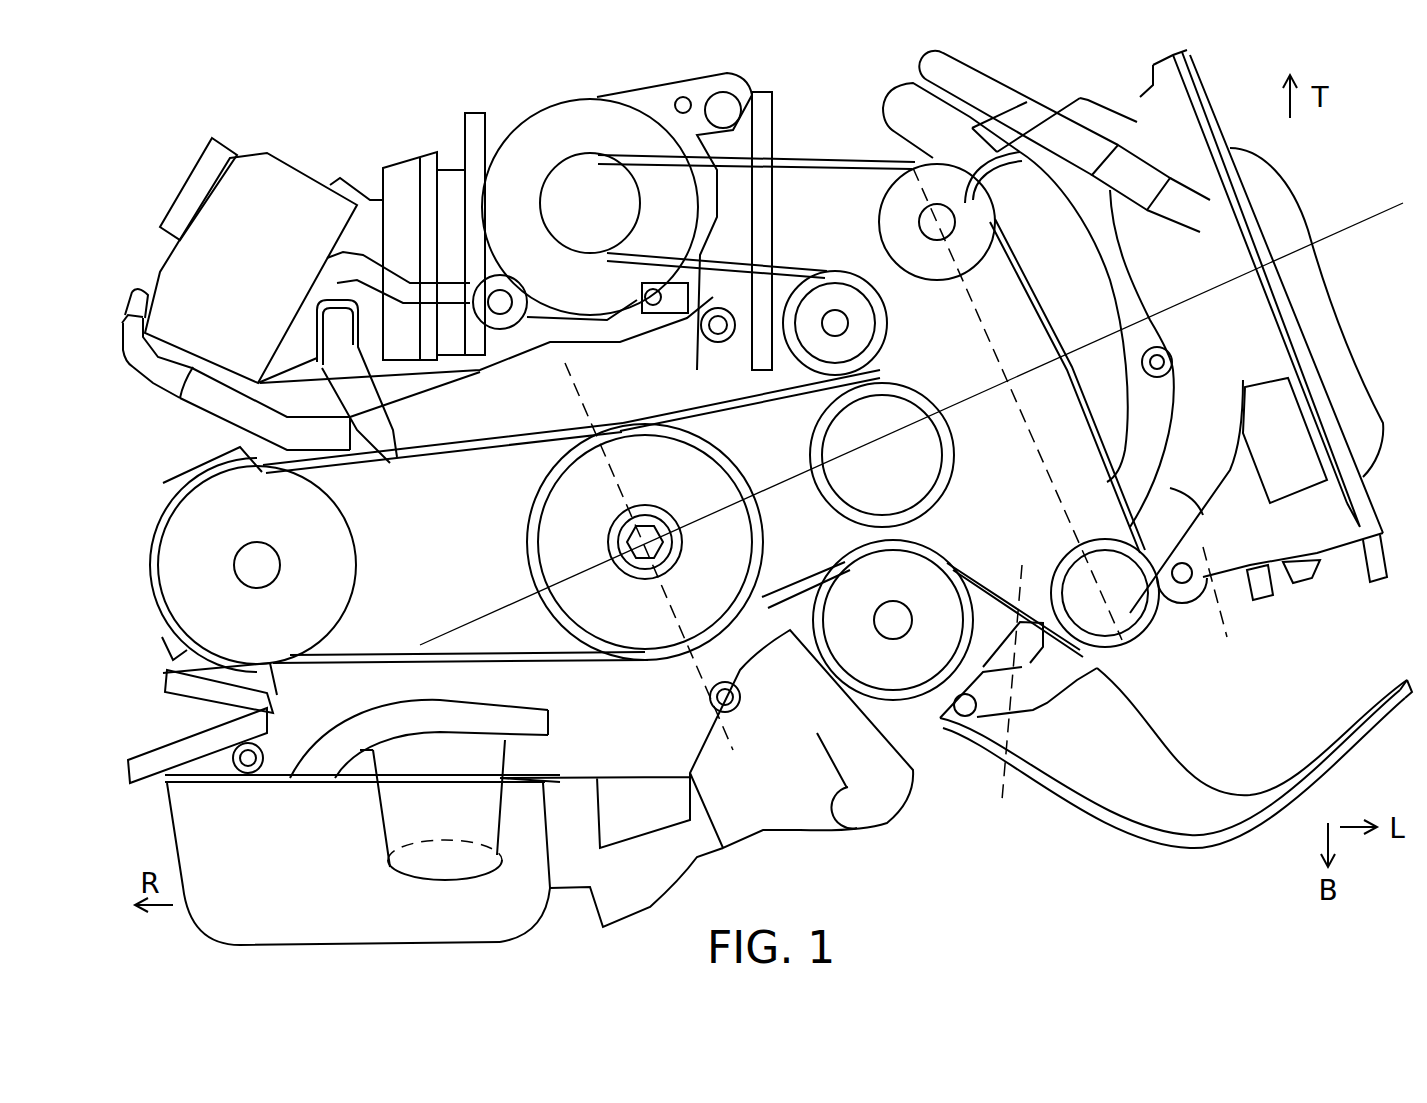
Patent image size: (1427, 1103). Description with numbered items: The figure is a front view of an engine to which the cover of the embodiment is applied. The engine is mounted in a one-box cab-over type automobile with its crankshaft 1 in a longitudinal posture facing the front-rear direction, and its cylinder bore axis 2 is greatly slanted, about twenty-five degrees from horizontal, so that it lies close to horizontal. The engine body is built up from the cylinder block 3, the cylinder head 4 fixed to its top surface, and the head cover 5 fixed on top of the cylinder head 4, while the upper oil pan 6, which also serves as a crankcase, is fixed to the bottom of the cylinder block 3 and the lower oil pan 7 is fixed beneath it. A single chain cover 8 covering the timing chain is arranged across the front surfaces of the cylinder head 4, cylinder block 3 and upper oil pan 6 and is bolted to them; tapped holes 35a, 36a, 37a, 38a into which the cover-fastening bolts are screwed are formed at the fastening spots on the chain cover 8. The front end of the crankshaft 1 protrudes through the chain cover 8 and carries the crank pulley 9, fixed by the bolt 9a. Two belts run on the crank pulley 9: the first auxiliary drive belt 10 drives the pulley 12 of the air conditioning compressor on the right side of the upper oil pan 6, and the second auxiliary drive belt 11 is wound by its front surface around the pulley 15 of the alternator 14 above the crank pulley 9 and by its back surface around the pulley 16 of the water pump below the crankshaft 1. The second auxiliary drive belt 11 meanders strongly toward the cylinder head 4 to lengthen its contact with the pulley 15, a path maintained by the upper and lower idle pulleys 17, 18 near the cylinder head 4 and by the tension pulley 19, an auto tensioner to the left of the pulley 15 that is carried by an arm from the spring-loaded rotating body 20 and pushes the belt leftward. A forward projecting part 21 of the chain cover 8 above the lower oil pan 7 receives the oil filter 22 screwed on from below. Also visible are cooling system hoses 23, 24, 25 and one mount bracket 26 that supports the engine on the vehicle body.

The crankshaft 1 is at (643, 577).
The cylinder bore axis 2 is at (1370, 217).
The cylinder block 3 is at (1006, 691).
The cylinder head 4 is at (1199, 607).
The head cover 5 is at (1365, 407).
The upper oil pan 6 is at (643, 747).
The lower oil pan 7 is at (213, 905).
The chain cover 8 is at (910, 327).
The crank pulley 9 is at (548, 540).
The bolt 9a is at (672, 548).
The first auxiliary drive belt 10 is at (427, 657).
The second auxiliary drive belt 11 is at (765, 292).
The pulley of air conditioning compressor 12 is at (193, 537).
The alternator 14 is at (515, 155).
The pulley of alternator 15 is at (588, 185).
The pulley of water pump 16 is at (920, 690).
The upper idle pulley 17 is at (938, 262).
The lower idle pulley 18 is at (1157, 610).
The tension pulley 19 is at (875, 352).
The rotating body 20 is at (920, 468).
The forward projecting part 21 is at (420, 710).
The oil filter 22 is at (430, 868).
The cooling system hose 23 is at (1113, 400).
The cooling system hose 24 is at (1328, 305).
The cooling system hose 25 is at (817, 737).
The mount bracket 26 is at (1248, 805).
The tapped hole 35a is at (1160, 345).
The tapped hole 36a is at (247, 772).
The tapped hole 37a is at (653, 306).
The tapped hole 38a is at (728, 705).